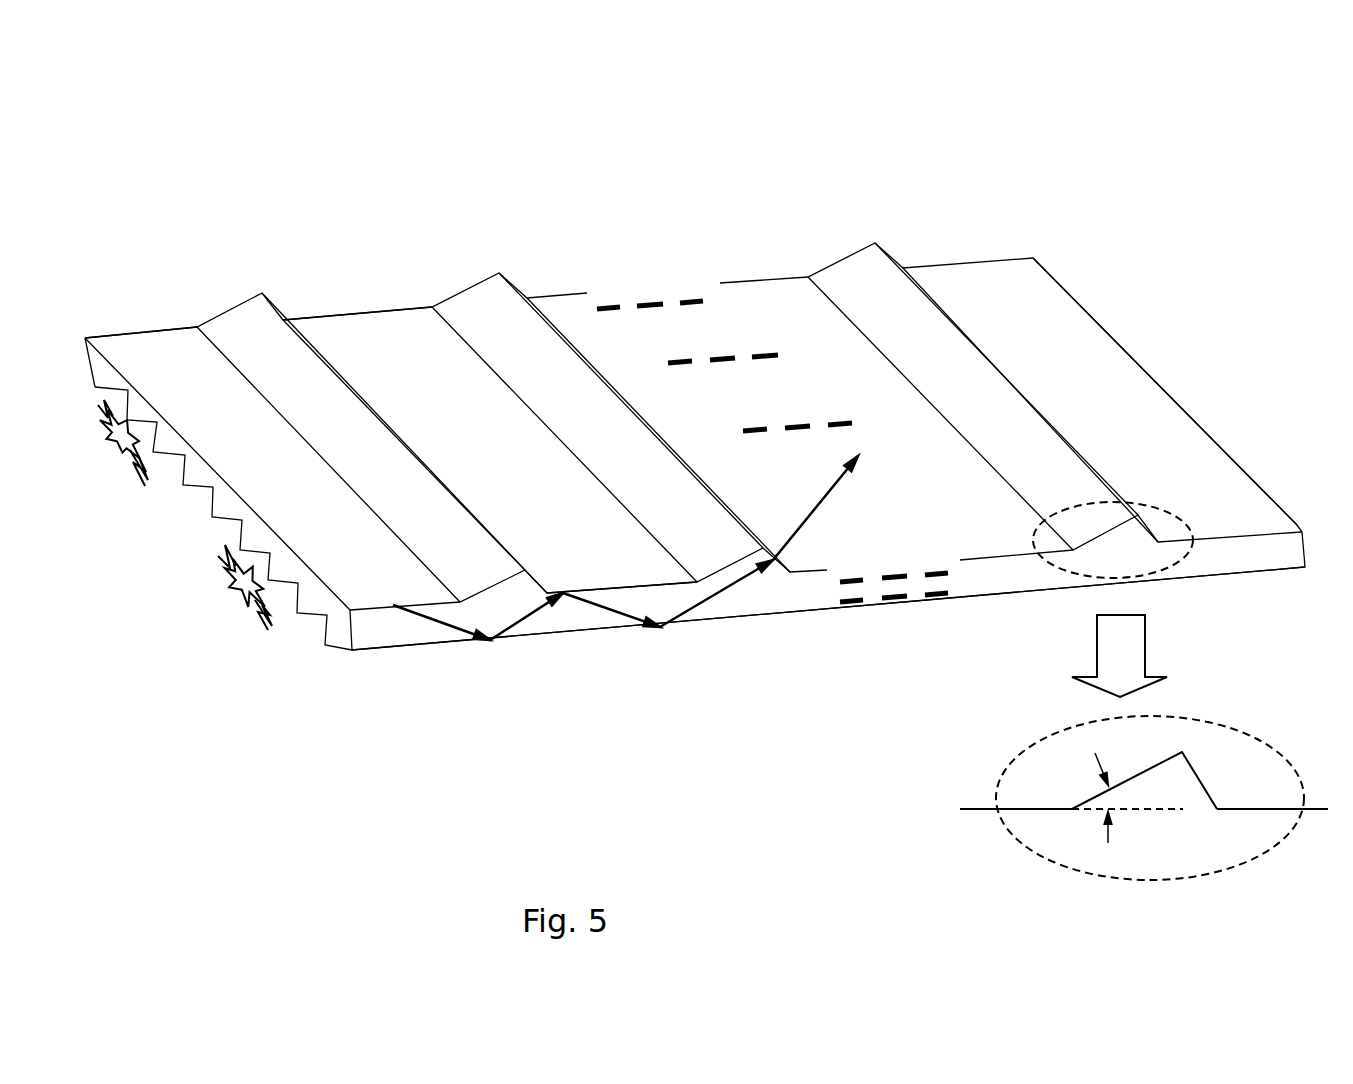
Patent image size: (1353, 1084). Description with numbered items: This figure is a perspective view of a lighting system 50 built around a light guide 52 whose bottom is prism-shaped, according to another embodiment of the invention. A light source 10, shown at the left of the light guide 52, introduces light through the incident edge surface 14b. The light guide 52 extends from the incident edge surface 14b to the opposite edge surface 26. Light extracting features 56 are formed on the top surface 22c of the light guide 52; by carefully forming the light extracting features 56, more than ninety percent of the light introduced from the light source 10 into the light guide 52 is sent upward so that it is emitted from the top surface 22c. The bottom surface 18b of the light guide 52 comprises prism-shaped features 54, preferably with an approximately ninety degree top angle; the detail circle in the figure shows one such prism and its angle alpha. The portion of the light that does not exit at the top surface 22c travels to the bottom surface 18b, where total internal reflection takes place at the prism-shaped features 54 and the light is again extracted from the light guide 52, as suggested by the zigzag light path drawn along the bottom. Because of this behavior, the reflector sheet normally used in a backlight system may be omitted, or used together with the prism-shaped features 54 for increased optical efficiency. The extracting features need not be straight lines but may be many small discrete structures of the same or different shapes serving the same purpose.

The lighting system 50 is at (653, 228).
The light extracting features 56 is at (482, 286).
The light guide 52 is at (773, 292).
The top surface 22c is at (490, 450).
The edge surface 26 is at (1133, 350).
The incident edge surface 14b is at (103, 365).
The prism-shaped features 54 is at (317, 613).
The bottom surface 18b is at (740, 595).
The light source 10 is at (185, 569).